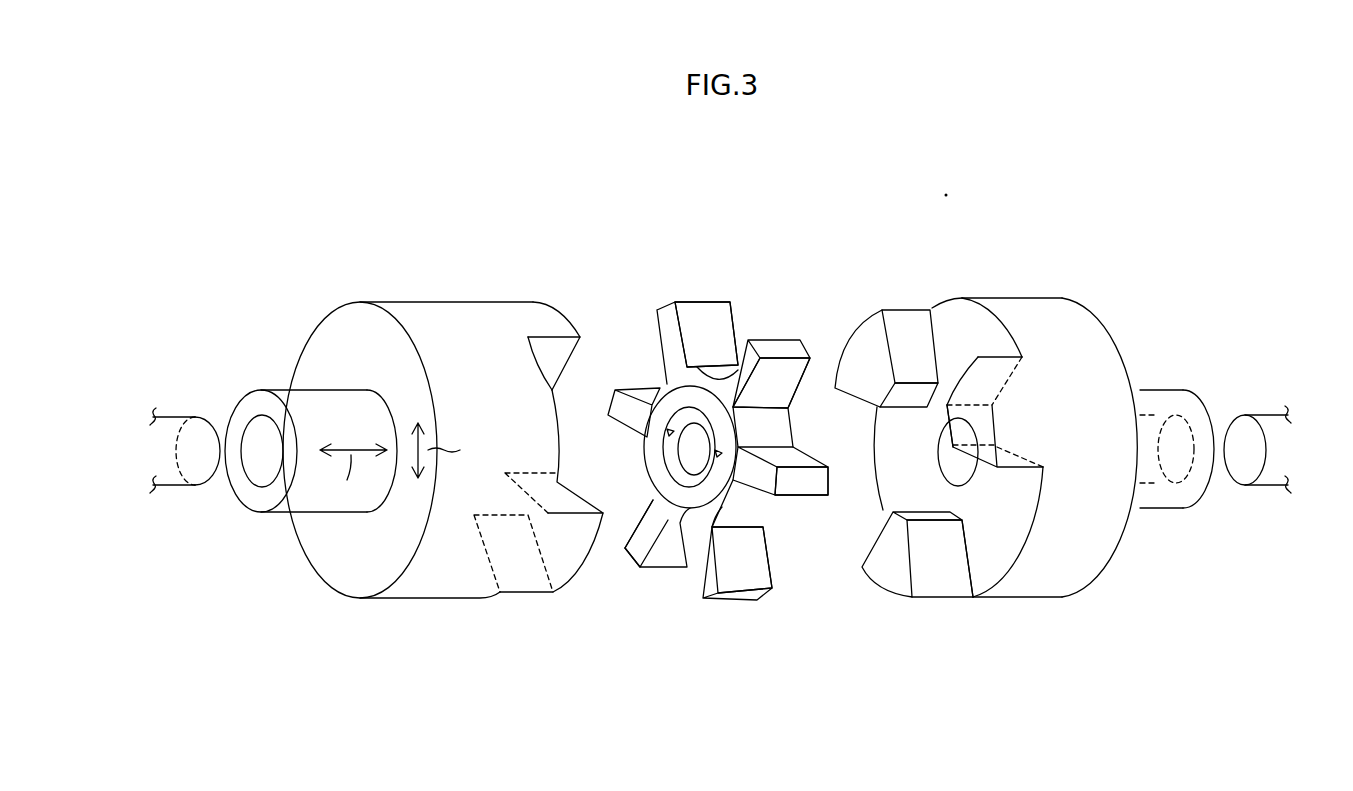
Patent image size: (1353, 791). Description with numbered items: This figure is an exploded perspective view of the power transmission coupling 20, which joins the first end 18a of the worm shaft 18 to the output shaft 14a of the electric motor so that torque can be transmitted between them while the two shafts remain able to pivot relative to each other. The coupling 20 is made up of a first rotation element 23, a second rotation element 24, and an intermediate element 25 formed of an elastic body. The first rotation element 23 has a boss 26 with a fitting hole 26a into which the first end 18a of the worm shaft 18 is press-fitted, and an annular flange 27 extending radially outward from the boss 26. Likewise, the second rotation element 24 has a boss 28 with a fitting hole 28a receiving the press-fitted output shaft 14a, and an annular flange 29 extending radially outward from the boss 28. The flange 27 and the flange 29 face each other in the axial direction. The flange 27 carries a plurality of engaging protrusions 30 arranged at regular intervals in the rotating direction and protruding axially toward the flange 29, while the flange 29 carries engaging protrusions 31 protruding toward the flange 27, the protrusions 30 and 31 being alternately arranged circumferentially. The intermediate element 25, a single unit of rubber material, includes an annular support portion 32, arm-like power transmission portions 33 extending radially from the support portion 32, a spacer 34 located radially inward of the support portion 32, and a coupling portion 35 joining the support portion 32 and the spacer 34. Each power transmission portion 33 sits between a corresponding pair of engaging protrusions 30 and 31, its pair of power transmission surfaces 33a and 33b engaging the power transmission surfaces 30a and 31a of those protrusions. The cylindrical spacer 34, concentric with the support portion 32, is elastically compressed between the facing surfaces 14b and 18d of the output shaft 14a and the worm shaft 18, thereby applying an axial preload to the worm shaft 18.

The output shaft 14a is at (1277, 417).
The facing surface of the output shaft 14b is at (1240, 434).
The worm shaft 18 is at (177, 414).
The first end of the worm shaft 18a is at (173, 487).
The facing surface of the worm shaft 18d is at (199, 436).
The power transmission coupling 20 is at (728, 428).
The first rotation element 23 is at (445, 450).
The second rotation element 24 is at (987, 444).
The intermediate element 25 is at (728, 448).
The boss 26 is at (320, 405).
The fitting hole 26a is at (262, 462).
The annular flange 27 is at (441, 588).
The boss 28 is at (1162, 395).
The fitting hole 28a is at (1193, 467).
The annular flange 29 is at (1113, 532).
The engaging protrusions 30 is at (543, 323).
The power transmission surfaces 30a is at (553, 350).
The engaging protrusions 31 is at (853, 375).
The power transmission surfaces 31a is at (905, 328).
The annular support portion 32 is at (678, 522).
The power transmission portions 33 is at (712, 298).
The power transmission surface 33a is at (797, 458).
The power transmission surface 33b is at (720, 332).
The spacer 34 is at (690, 466).
The coupling portion 35 is at (718, 453).